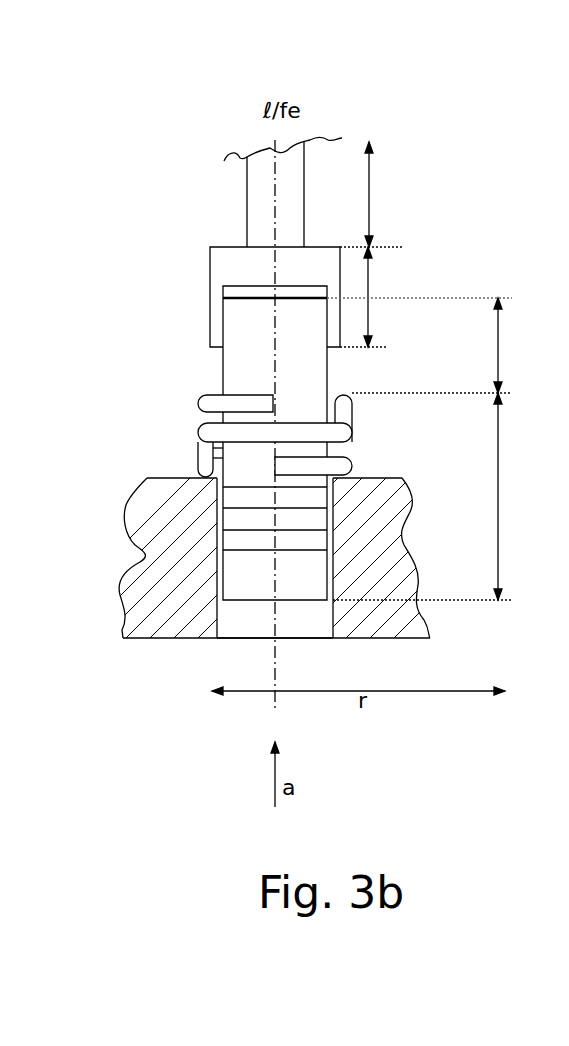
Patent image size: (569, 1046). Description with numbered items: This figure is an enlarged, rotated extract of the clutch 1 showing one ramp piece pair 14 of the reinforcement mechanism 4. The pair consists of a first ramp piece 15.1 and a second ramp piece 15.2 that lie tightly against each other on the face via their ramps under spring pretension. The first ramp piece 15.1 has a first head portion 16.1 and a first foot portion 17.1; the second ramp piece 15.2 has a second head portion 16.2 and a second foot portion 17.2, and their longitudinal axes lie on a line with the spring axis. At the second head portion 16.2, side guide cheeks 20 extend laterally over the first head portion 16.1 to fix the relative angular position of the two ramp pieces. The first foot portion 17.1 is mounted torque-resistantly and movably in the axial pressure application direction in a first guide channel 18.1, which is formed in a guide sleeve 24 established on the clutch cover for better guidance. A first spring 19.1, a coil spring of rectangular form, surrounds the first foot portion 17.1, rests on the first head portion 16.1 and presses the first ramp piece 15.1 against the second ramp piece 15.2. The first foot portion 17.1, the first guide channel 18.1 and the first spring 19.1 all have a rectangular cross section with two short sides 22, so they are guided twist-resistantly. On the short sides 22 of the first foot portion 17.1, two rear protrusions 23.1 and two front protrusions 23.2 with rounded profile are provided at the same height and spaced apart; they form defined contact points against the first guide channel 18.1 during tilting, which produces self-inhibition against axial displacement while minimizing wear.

The clutch 1 is at (460, 153).
The reinforcement mechanism 4 is at (230, 150).
The ramp piece pair 14 is at (242, 172).
The first ramp piece 15.1 is at (216, 360).
The second ramp piece 15.2 is at (203, 240).
The first head portion 16.1 is at (443, 345).
The second head portion 16.2 is at (384, 297).
The first foot portion 17.1 is at (446, 496).
The second foot portion 17.2 is at (397, 194).
The first guide channel 18.1 is at (241, 625).
The first spring 19.1 is at (200, 399).
The side guide cheeks 20 is at (333, 336).
The short sides 22 is at (240, 440).
The rear protrusions 23.1 is at (318, 500).
The front protrusions 23.2 is at (318, 543).
The guide sleeve 24 is at (152, 550).